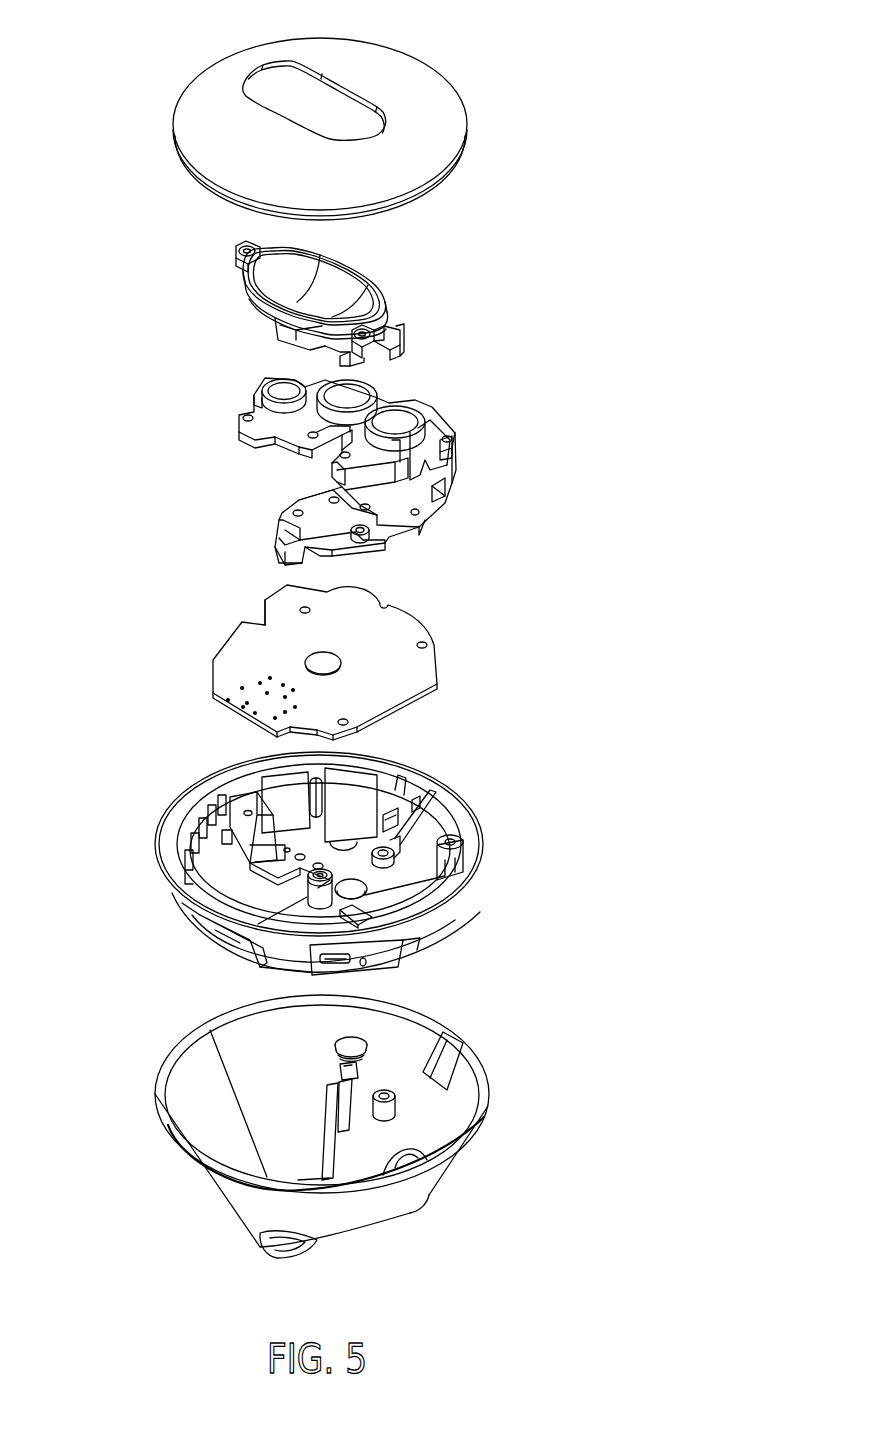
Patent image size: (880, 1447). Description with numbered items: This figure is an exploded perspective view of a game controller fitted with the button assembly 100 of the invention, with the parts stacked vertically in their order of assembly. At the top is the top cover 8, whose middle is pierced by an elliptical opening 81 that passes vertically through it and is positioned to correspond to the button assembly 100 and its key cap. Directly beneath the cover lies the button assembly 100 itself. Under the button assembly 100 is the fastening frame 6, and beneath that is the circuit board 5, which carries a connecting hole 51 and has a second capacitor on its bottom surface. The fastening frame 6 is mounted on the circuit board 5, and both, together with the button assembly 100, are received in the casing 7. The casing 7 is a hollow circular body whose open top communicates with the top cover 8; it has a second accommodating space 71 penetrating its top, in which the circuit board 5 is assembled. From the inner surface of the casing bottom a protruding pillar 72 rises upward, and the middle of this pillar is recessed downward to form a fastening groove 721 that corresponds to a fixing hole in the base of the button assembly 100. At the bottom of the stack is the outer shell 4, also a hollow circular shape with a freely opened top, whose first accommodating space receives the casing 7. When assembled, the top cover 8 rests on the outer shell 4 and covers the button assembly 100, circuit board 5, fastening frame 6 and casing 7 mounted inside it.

The outer shell 4 is at (200, 1085).
The circuit board 5 is at (329, 662).
The fastening frame 6 is at (437, 475).
The casing 7 is at (338, 863).
The top cover 8 is at (321, 110).
The connecting hole 51 is at (311, 656).
The second accommodating space 71 is at (390, 833).
The protruding pillar 72 is at (323, 897).
The elliptical opening 81 is at (257, 70).
The button assembly 100 is at (338, 277).
The fastening groove 721 is at (357, 880).